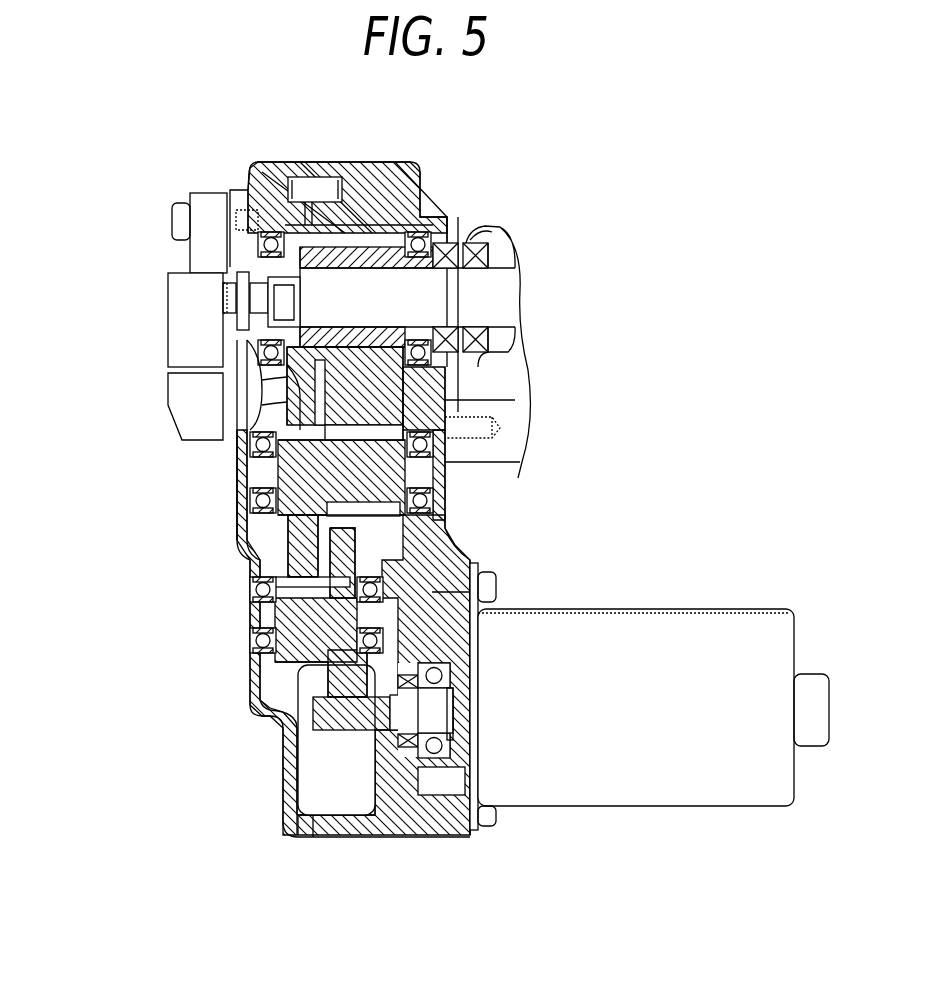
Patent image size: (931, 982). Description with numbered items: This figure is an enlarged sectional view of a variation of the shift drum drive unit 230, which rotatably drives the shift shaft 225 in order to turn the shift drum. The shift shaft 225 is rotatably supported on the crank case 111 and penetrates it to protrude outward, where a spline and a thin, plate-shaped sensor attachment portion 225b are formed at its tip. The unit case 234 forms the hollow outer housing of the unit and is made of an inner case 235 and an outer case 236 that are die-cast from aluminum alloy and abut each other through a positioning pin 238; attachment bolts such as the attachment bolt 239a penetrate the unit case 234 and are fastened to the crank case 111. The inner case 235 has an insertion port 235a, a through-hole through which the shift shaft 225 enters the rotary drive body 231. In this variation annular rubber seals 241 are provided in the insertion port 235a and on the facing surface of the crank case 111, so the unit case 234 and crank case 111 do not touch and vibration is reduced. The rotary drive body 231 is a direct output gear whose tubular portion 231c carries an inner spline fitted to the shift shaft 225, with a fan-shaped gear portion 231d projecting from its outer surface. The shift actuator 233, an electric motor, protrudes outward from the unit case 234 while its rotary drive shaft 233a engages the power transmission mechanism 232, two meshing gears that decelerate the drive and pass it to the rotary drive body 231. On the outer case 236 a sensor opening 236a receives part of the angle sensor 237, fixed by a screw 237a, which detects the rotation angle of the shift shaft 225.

The crank case 111 is at (488, 238).
The shift shaft 225 is at (485, 302).
The sensor attachment portion 225b is at (187, 297).
The shift drum drive unit 230 is at (284, 816).
The rotary drive body 231 is at (169, 396).
The tubular portion 231c is at (300, 382).
The gear portion 231d is at (300, 405).
The power transmission mechanism 232 is at (300, 535).
The shift actuator 233 is at (624, 808).
The rotary drive shaft 233a is at (345, 732).
The unit case 234 is at (411, 556).
The inner case 235 is at (445, 562).
The insertion port 235a is at (492, 356).
The outer case 236 is at (298, 840).
The sensor opening 236a is at (262, 318).
The angle sensor 237 is at (168, 258).
The screw 237a is at (175, 222).
The positioning pin 238 is at (306, 175).
The attachment bolt 239a is at (480, 444).
The rubber seal 241 is at (446, 240).